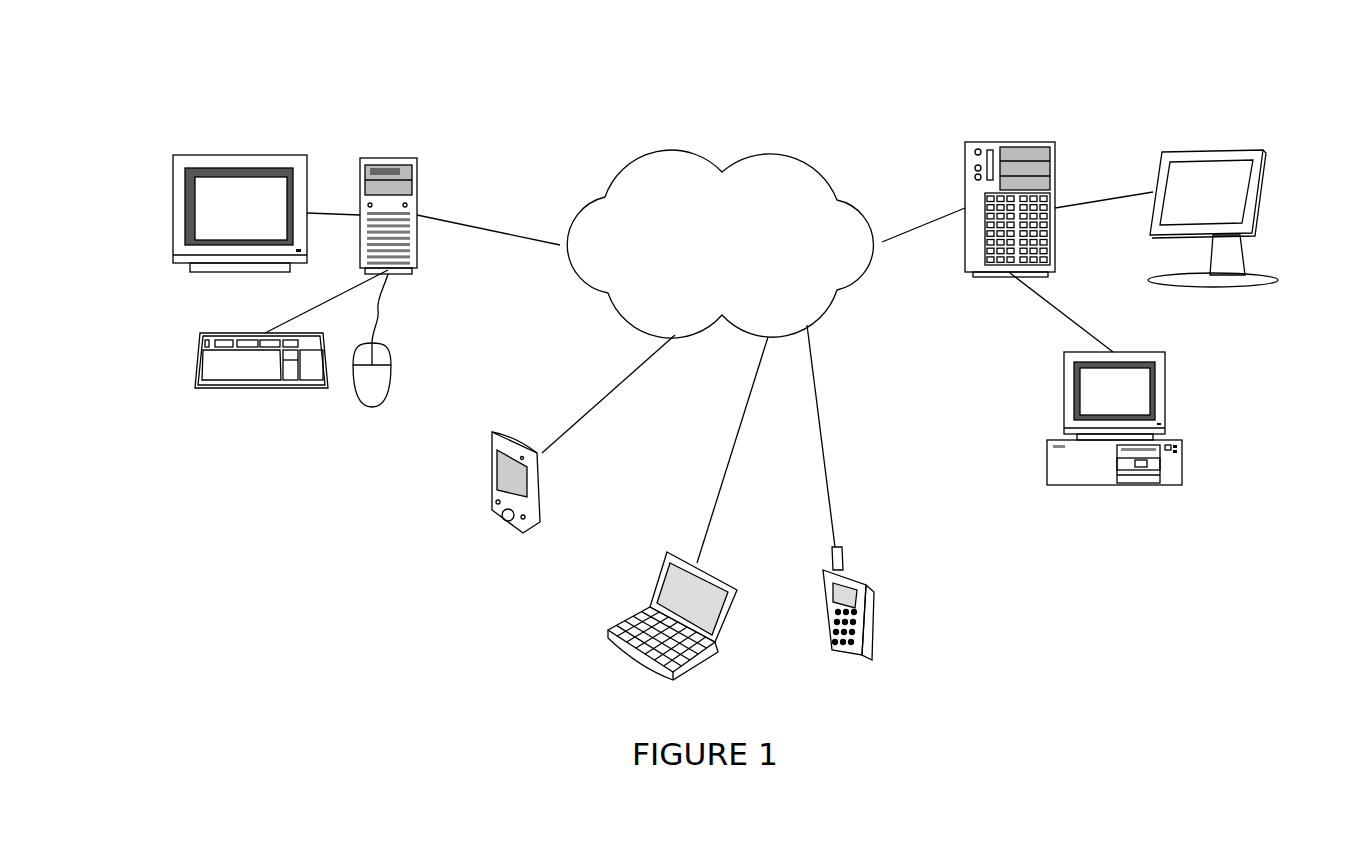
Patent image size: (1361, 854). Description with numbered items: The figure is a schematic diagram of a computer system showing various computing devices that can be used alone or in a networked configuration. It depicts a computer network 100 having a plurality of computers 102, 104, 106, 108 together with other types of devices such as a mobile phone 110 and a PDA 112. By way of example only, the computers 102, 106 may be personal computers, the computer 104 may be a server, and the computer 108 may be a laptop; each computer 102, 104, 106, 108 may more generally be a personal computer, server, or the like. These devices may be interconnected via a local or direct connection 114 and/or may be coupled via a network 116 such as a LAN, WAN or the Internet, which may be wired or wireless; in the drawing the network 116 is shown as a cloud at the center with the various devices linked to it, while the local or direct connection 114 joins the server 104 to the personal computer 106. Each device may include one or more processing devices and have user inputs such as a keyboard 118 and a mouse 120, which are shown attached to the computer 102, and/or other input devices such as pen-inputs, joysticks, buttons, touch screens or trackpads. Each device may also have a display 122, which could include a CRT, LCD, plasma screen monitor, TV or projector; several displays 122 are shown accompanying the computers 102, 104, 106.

The computer network 100 is at (581, 56).
The computer 102 is at (375, 158).
The computer 104 is at (1055, 145).
The computer 106 is at (1047, 450).
The computer 108 is at (608, 630).
The mobile phone 110 is at (880, 608).
The PDA 112 is at (492, 505).
The local or direct connection 114 is at (1055, 311).
The network 116 is at (766, 153).
The keyboard 118 is at (198, 357).
The mouse 120 is at (392, 365).
The display 122 is at (173, 213).